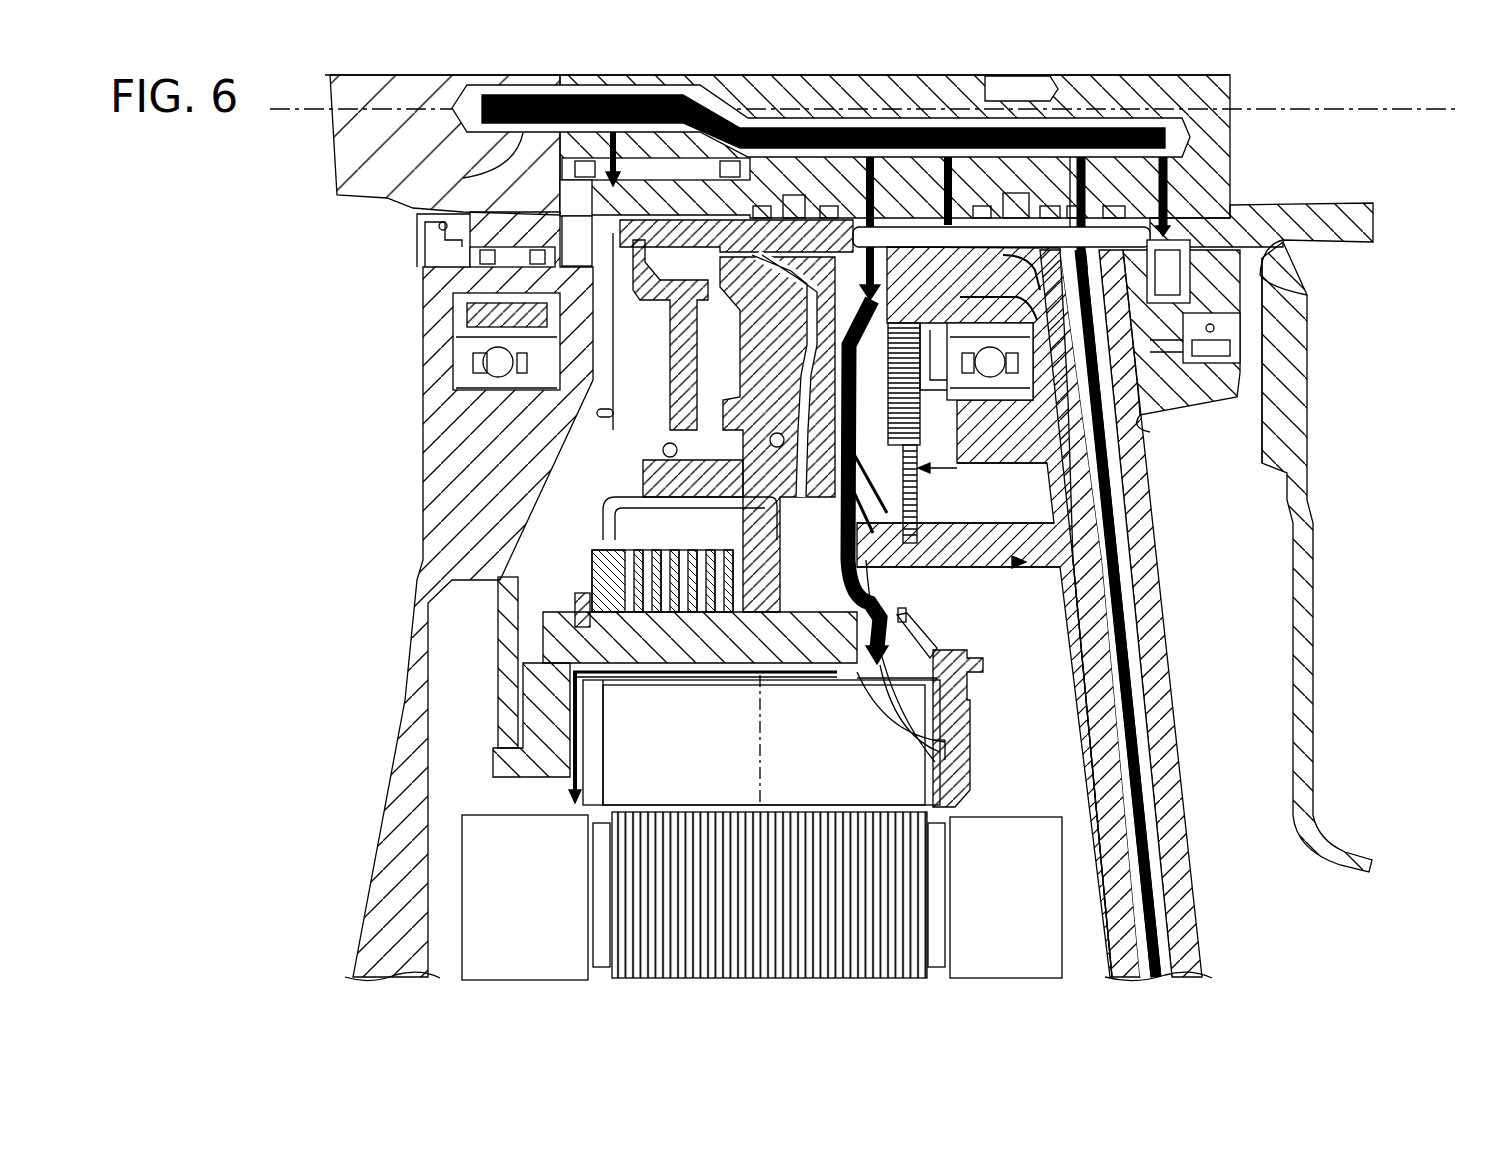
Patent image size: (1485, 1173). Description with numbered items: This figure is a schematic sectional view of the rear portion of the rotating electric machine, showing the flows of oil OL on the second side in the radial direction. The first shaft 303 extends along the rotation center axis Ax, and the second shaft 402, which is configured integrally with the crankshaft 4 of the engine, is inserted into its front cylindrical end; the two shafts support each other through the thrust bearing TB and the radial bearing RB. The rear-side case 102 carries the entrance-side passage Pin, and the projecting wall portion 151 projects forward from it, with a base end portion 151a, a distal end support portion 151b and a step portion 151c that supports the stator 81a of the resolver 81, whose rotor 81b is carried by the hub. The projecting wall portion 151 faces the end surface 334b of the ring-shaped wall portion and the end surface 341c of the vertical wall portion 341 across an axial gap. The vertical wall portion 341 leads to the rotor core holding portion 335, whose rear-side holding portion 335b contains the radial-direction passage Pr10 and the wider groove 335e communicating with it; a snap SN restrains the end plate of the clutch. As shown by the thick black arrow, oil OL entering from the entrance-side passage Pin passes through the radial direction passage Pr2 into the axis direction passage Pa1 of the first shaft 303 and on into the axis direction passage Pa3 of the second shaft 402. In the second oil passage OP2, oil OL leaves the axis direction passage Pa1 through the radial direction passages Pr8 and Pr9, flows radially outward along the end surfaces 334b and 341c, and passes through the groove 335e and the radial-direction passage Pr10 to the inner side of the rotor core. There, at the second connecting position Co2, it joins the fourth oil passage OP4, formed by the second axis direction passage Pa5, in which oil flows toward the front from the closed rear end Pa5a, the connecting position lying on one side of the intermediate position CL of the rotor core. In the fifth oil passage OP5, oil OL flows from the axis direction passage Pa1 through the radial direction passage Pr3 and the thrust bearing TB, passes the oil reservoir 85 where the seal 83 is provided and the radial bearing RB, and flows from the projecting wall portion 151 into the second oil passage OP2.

The crankshaft 4 is at (365, 162).
The first shaft 303 is at (1200, 97).
The oil OL is at (1233, 105).
The axis direction passage Pa1 is at (1180, 125).
The radial direction passage Pr2 is at (1085, 165).
The radial direction passage Pr3 is at (1068, 172).
The radial direction passage Pr8 is at (1172, 200).
The rotation center axis Ax is at (1418, 118).
The fifth oil passage OP5 is at (1258, 243).
The thrust bearing TB is at (1165, 275).
The radial bearing RB is at (960, 318).
The seal 83 is at (1197, 343).
The oil reservoir 85 is at (1005, 345).
The resolver 81 is at (1153, 460).
The stator 81a is at (1153, 480).
The rotor 81b is at (1010, 412).
The end surface 334b is at (1000, 500).
The projecting wall portion 151 is at (1150, 582).
The base end portion 151a is at (1026, 562).
The distal end support portion 151b is at (1145, 748).
The step portion 151c is at (1140, 513).
The groove 335e is at (895, 600).
The rear-side holding portion 335b is at (710, 637).
The rotor core holding portion 335 is at (434, 719).
The snap SN is at (890, 620).
The rear end Pa5a is at (925, 650).
The radial-direction passage Pr10 is at (950, 690).
The second connecting position Co2 is at (920, 708).
The entrance-side passage Pin is at (1142, 812).
The end surface 341c is at (965, 795).
The vertical wall portion 341 is at (1004, 776).
The rear-side case 102 is at (1183, 893).
The axis direction passage Pa3 is at (505, 178).
The second shaft 402 is at (440, 232).
The radial direction passage Pr9 is at (700, 316).
The second oil passage OP2 is at (777, 505).
The second axis direction passage Pa5 is at (595, 680).
The fourth oil passage OP4 is at (722, 680).
The intermediate position CL is at (770, 746).